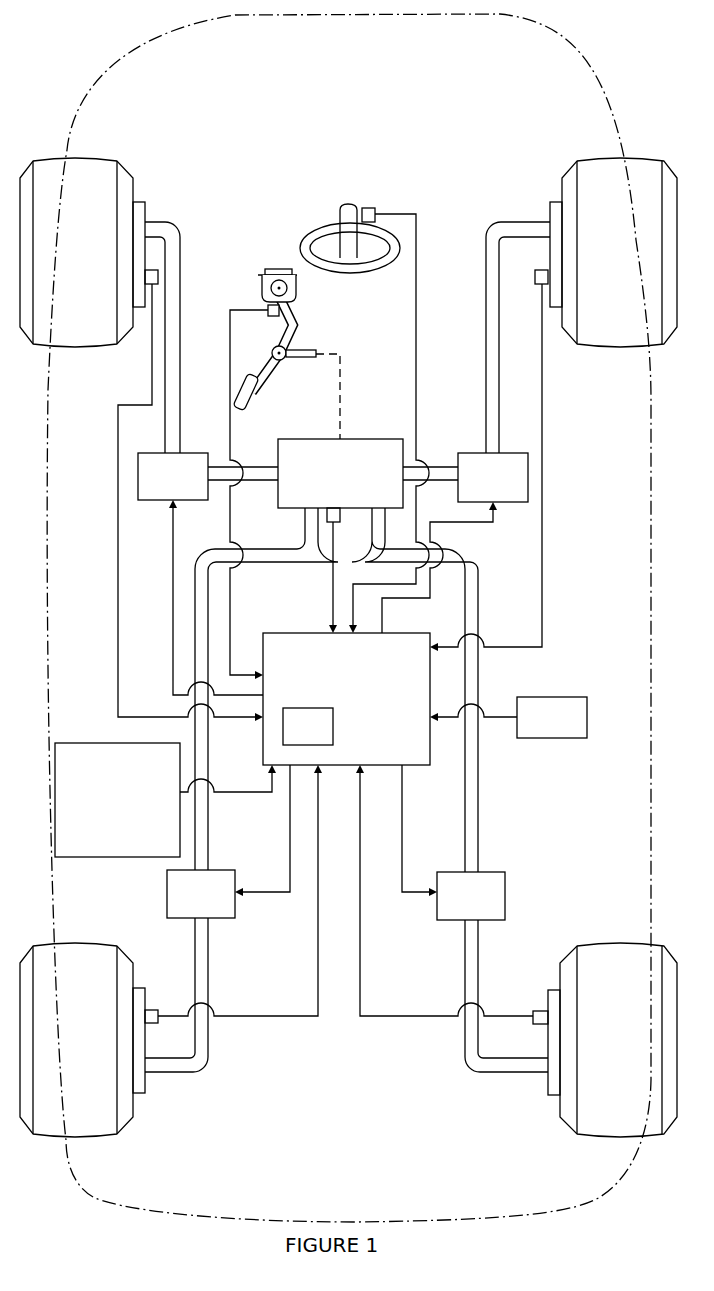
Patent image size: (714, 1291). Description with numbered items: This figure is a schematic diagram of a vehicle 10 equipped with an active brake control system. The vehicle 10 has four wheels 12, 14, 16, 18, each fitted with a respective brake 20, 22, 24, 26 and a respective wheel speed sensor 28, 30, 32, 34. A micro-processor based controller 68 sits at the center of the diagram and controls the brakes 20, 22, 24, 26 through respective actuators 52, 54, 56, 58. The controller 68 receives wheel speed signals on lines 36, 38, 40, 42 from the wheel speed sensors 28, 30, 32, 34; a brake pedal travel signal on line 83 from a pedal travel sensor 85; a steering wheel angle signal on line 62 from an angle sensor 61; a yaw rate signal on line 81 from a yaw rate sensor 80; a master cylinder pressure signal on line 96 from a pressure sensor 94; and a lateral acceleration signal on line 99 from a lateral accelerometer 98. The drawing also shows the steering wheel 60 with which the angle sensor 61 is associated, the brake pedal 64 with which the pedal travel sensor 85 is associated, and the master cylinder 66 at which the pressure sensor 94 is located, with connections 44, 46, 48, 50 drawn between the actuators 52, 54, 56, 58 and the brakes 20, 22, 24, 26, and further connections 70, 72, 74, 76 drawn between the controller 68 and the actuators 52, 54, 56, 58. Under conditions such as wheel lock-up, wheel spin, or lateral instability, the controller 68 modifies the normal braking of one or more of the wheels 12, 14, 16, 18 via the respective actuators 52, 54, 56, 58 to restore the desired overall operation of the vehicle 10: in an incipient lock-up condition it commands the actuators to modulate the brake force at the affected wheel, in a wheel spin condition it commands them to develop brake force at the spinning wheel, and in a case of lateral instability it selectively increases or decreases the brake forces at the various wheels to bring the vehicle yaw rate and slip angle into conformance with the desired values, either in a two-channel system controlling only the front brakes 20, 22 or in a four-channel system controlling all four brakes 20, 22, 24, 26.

The vehicle 10 is at (582, 44).
The wheel 12 is at (98, 160).
The wheel 14 is at (600, 162).
The wheel 16 is at (82, 1130).
The wheel 18 is at (612, 1130).
The brake 20 is at (140, 205).
The brake 22 is at (556, 205).
The brake 24 is at (142, 1090).
The brake 26 is at (552, 1090).
The wheel speed sensor 28 is at (155, 276).
The wheel speed sensor 30 is at (538, 277).
The wheel speed sensor 32 is at (155, 1010).
The wheel speed sensor 34 is at (538, 1010).
The line 36 is at (116, 415).
The line 38 is at (545, 420).
The line 40 is at (285, 1022).
The line 42 is at (385, 1022).
The left front brake line 44 is at (168, 224).
The right front brake line 46 is at (500, 226).
The left rear brake line 48 is at (207, 950).
The right rear brake line 50 is at (468, 975).
The actuator 52 is at (138, 477).
The actuator 54 is at (528, 477).
The actuator 56 is at (167, 895).
The actuator 58 is at (505, 886).
The steering wheel 60 is at (302, 250).
The angle sensor 61 is at (363, 210).
The line 62 is at (392, 213).
The brake pedal 64 is at (243, 403).
The master cylinder 66 is at (360, 438).
The controller 68 is at (415, 762).
The left front actuator control line 70 is at (170, 565).
The right front actuator control line 72 is at (472, 525).
The left rear actuator control line 74 is at (262, 895).
The right rear actuator control line 76 is at (401, 920).
The yaw rate sensor 80 is at (100, 748).
The line 81 is at (222, 793).
The line 83 is at (229, 318).
The pedal travel sensor 85 is at (270, 317).
The pressure sensor 94 is at (337, 522).
The line 96 is at (330, 582).
The lateral accelerometer 98 is at (552, 740).
The line 99 is at (500, 717).